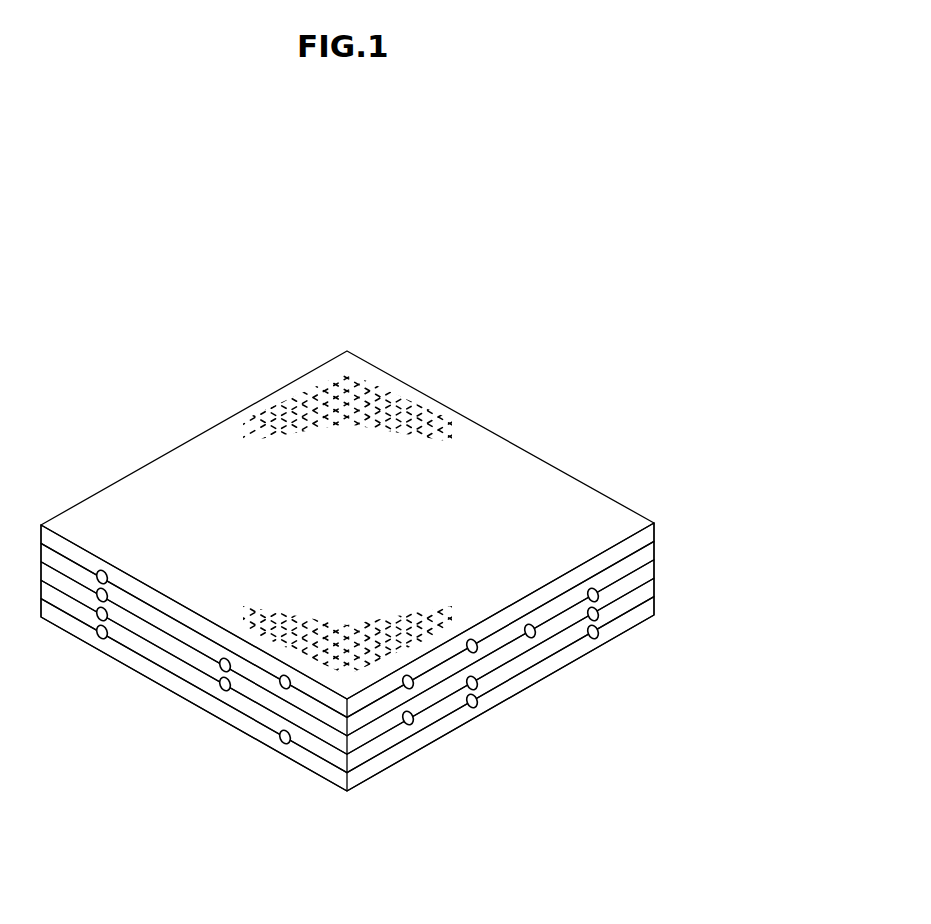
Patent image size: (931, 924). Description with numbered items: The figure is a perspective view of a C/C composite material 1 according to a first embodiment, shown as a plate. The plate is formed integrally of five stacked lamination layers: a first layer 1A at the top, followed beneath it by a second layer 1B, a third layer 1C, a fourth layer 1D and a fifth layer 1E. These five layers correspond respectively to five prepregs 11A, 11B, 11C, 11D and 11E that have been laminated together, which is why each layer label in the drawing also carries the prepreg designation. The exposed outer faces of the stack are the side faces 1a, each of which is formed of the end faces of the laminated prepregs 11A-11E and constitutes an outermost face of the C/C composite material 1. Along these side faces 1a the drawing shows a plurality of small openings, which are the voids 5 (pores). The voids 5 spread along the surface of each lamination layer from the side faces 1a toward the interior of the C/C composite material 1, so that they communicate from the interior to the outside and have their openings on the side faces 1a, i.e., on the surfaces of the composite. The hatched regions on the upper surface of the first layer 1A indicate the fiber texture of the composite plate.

The C/C composite material 1 is at (101, 301).
The side face 1a is at (180, 664).
The first layer 1A is at (411, 527).
The second layer 1B is at (429, 628).
The third layer 1C is at (419, 653).
The fourth layer 1D is at (431, 675).
The fifth layer 1E is at (412, 694).
The prepreg 11A is at (655, 531).
The prepreg 11B is at (655, 550).
The prepreg 11C is at (655, 568).
The prepreg 11D is at (655, 589).
The prepreg 11E is at (655, 612).
The void 5 is at (95, 614).